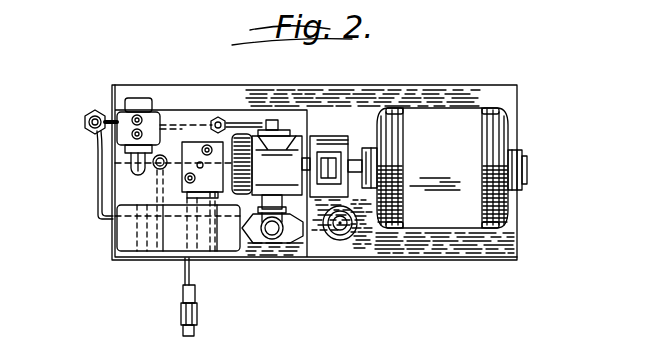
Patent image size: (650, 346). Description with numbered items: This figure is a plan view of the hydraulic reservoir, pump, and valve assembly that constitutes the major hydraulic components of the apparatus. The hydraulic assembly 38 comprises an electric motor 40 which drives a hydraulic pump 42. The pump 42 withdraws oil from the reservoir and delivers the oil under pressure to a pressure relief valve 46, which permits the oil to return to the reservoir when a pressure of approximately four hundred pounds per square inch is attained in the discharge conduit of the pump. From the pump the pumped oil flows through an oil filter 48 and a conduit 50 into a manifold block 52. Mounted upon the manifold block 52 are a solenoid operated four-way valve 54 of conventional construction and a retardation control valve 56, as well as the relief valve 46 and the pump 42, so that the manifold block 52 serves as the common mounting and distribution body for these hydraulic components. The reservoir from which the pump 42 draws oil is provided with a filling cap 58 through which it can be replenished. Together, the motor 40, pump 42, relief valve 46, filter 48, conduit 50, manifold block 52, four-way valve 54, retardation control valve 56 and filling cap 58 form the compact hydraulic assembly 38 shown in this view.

The hydraulic assembly 38 is at (546, 157).
The electric motor 40 is at (445, 118).
The hydraulic pump 42 is at (286, 150).
The pressure relief valve 46 is at (155, 116).
The oil filter 48 is at (84, 126).
The conduit 50 is at (101, 177).
The manifold block 52 is at (263, 246).
The solenoid operated four-way valve 54 is at (173, 246).
The retardation control valve 56 is at (188, 143).
The filling cap 58 is at (357, 245).